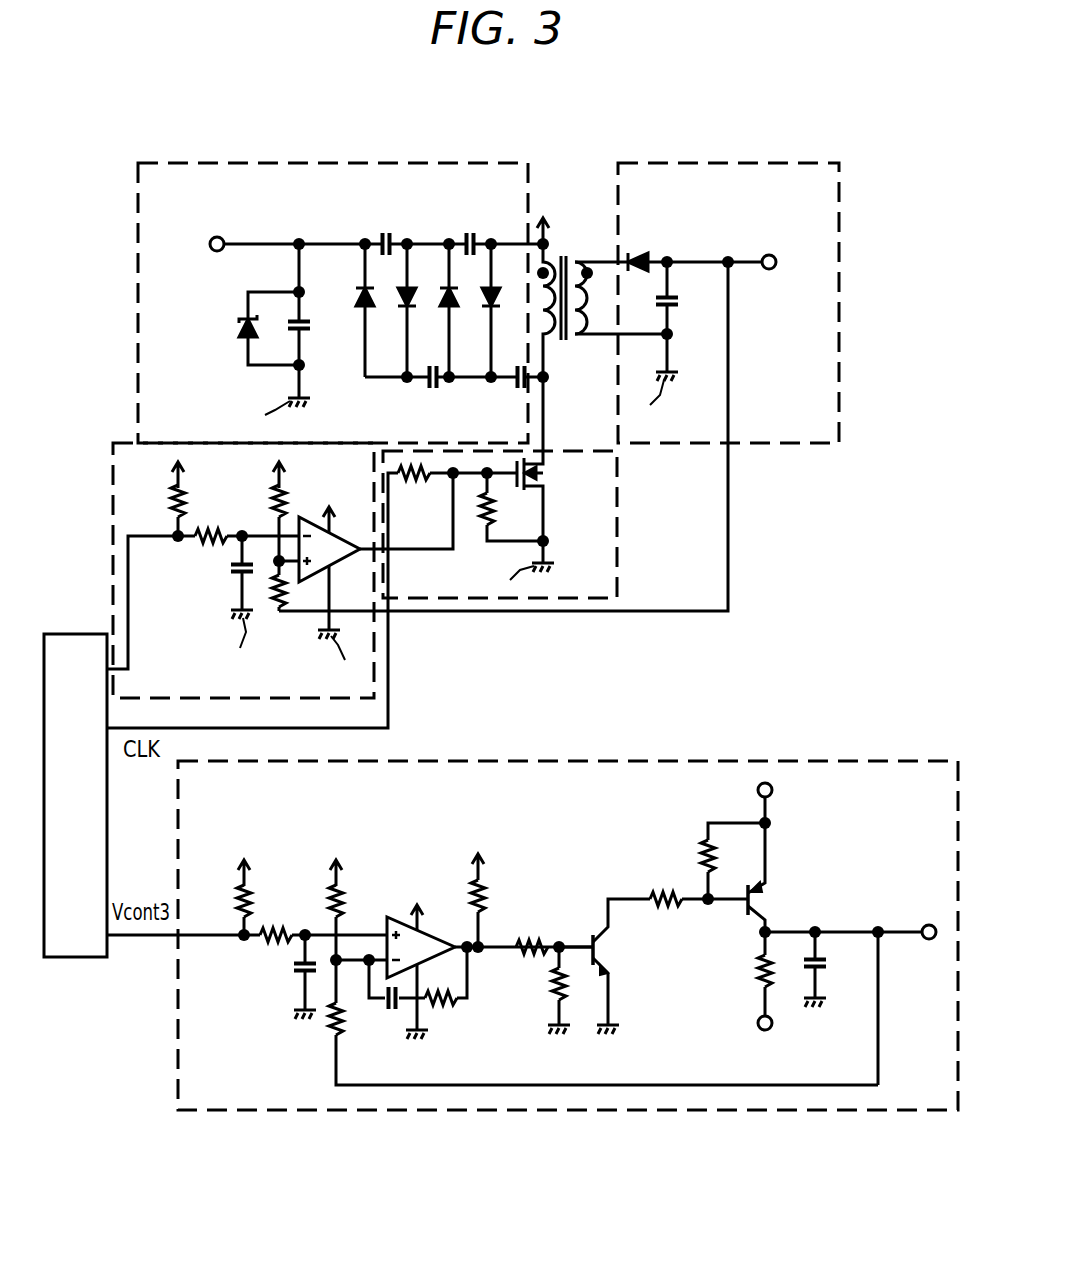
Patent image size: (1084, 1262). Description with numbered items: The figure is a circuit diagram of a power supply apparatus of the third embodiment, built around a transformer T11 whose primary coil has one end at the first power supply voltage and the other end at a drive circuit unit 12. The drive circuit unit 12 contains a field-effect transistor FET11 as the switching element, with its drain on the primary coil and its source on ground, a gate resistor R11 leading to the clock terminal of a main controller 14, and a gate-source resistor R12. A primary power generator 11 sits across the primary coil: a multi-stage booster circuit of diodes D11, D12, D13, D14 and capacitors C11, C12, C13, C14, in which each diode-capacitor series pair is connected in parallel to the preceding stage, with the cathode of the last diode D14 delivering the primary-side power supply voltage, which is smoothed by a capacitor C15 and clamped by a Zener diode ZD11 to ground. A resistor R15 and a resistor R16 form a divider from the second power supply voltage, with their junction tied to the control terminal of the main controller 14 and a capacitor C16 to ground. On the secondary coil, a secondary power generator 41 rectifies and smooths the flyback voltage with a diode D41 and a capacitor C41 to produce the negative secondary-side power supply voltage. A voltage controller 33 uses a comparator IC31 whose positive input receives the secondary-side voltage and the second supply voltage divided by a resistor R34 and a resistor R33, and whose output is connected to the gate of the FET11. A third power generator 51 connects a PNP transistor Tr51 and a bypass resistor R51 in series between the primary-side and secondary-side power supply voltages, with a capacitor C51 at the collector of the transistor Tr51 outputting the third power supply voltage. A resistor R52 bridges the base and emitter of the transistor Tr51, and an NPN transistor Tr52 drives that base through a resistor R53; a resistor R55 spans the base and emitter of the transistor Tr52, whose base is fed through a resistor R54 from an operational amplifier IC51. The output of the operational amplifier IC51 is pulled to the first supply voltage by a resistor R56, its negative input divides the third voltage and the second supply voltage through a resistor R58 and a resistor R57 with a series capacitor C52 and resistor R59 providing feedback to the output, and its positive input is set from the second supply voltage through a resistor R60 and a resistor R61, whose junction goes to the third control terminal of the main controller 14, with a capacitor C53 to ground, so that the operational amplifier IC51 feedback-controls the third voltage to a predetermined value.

The primary power generator 11 is at (205, 163).
The secondary power generator 41 is at (670, 163).
The voltage controller 33 is at (113, 462).
The drive circuit unit 12 is at (617, 556).
The main controller 14 is at (85, 634).
The third power generator 51 is at (905, 761).
The capacitor C11 is at (518, 388).
The capacitor C12 is at (462, 236).
The capacitor C13 is at (432, 388).
The capacitor C14 is at (383, 236).
The capacitor C15 is at (311, 332).
The capacitor C16 is at (236, 572).
The capacitor C41 is at (680, 306).
The capacitor C51 is at (822, 968).
The capacitor C52 is at (386, 1008).
The capacitor C53 is at (297, 972).
The diode D11 is at (487, 310).
The diode D12 is at (445, 310).
The diode D13 is at (403, 310).
The diode D14 is at (358, 310).
The diode D41 is at (645, 246).
The Zener diode ZD11 is at (243, 340).
The gate resistor R11 is at (412, 480).
The gate-source resistor R12 is at (486, 516).
The resistor R15 is at (176, 500).
The resistor R16 is at (205, 541).
The resistor R33 is at (277, 500).
The resistor R34 is at (278, 602).
The bypass resistor R51 is at (762, 972).
The resistor R52 is at (703, 858).
The resistor R53 is at (663, 906).
The resistor R54 is at (535, 944).
The resistor R55 is at (555, 986).
The resistor R56 is at (476, 890).
The resistor R57 is at (333, 898).
The resistor R58 is at (334, 1037).
The resistor R59 is at (444, 1004).
The resistor R60 is at (241, 898).
The resistor R61 is at (276, 941).
The transformer T11 is at (581, 242).
The field-effect transistor FET11 is at (528, 486).
The comparator IC31 is at (337, 568).
The operational amplifier IC51 is at (396, 920).
The PNP transistor Tr51 is at (746, 908).
The NPN transistor Tr52 is at (592, 940).